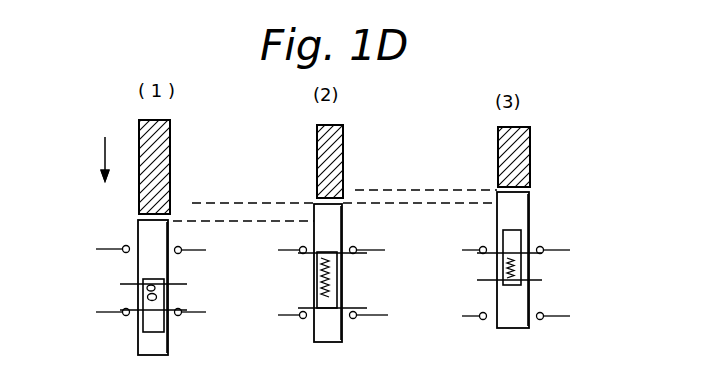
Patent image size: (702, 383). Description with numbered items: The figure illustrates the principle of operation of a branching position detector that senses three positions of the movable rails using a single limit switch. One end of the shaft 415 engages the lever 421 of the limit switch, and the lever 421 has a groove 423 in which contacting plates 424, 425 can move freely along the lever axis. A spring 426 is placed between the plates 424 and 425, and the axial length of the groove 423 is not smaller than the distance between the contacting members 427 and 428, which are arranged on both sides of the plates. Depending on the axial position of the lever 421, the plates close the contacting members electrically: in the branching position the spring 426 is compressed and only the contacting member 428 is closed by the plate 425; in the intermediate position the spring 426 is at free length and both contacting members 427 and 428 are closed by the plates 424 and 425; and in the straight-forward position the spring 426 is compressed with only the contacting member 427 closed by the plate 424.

The shaft 415 is at (168, 147).
The lever 421 is at (143, 230).
The groove 423 is at (160, 328).
The contacting plate 424 is at (190, 283).
The contacting plate 425 is at (190, 308).
The spring 426 is at (146, 301).
The contacting member 427 is at (123, 252).
The contacting member 428 is at (124, 316).